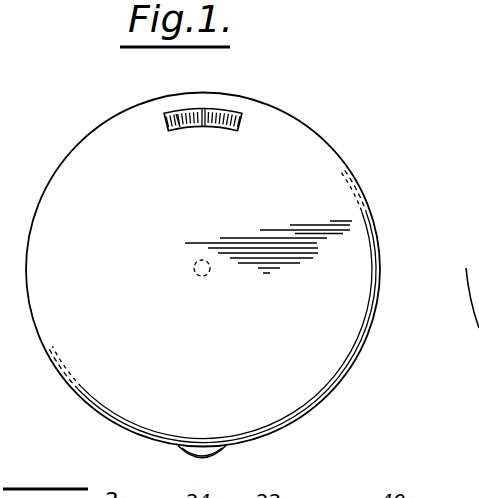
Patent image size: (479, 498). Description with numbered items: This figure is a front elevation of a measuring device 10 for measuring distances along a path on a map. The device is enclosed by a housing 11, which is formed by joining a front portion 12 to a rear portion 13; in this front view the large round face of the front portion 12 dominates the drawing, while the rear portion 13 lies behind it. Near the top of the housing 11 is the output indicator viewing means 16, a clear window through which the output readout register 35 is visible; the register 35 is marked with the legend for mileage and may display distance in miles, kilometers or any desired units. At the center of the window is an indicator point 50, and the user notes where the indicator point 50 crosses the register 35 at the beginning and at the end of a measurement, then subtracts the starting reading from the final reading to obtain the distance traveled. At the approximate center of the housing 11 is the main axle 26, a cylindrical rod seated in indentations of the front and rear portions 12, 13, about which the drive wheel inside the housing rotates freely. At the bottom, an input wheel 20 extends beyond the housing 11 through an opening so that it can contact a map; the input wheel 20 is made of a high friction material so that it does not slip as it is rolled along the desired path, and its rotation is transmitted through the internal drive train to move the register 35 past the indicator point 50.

The measuring device 10 is at (330, 117).
The housing 11 is at (350, 168).
The front portion 12 is at (348, 205).
The output indicator viewing means 16 is at (236, 110).
The indicator point 50 is at (205, 110).
The output readout register 35 is at (182, 108).
The main axle 26 is at (196, 278).
The input wheel 20 is at (195, 452).
The rear portion 13 is at (465, 335).